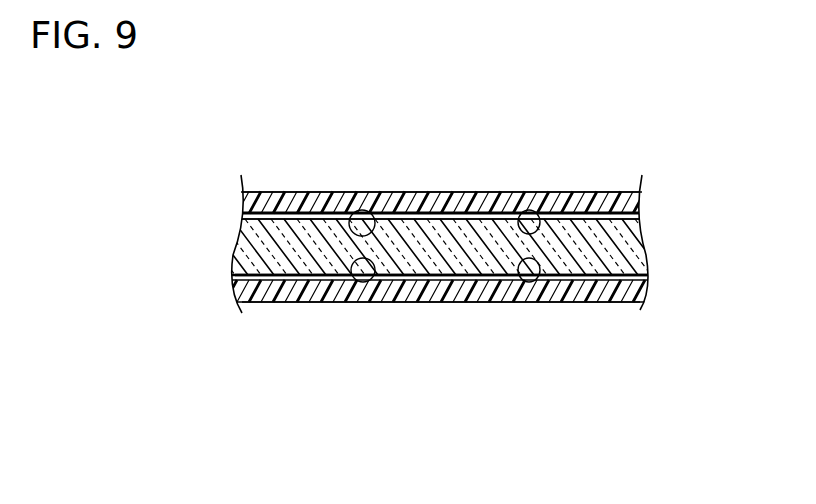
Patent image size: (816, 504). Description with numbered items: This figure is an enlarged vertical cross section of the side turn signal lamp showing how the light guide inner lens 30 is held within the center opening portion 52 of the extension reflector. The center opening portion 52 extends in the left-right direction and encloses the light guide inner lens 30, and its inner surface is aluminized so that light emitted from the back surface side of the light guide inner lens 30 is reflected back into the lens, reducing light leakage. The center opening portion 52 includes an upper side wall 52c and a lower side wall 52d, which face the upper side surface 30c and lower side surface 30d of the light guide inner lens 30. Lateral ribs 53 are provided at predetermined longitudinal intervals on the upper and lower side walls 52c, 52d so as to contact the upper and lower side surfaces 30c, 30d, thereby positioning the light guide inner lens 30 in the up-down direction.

The light guide inner lens 30 is at (620, 248).
The upper side surface of the light guide inner lens 30c is at (444, 222).
The lower side surface of the light guide inner lens 30d is at (440, 273).
The center opening portion 52 is at (285, 225).
The upper side wall 52c is at (311, 192).
The lower side wall 52d is at (307, 302).
The lateral ribs 53 is at (366, 210).